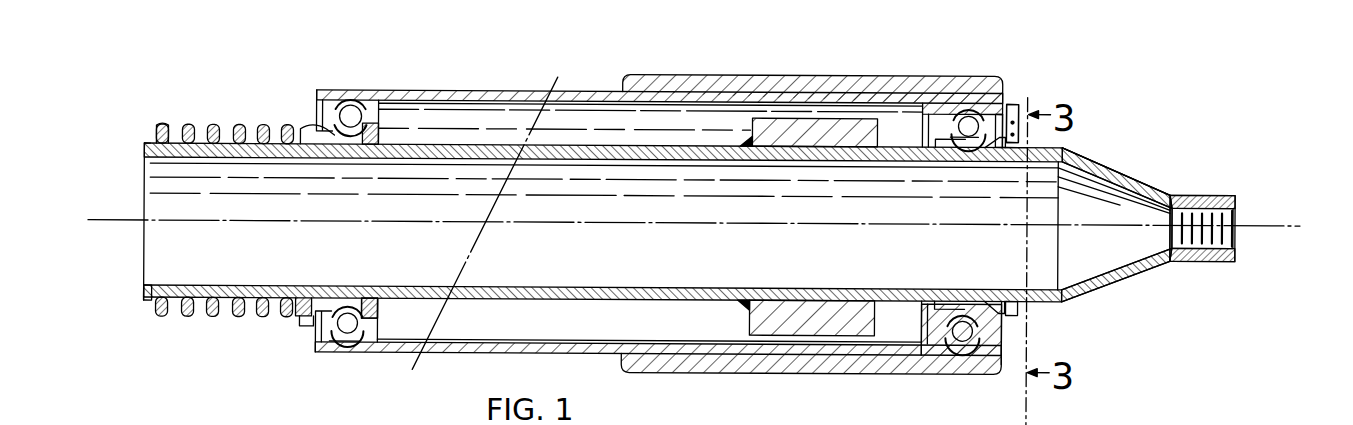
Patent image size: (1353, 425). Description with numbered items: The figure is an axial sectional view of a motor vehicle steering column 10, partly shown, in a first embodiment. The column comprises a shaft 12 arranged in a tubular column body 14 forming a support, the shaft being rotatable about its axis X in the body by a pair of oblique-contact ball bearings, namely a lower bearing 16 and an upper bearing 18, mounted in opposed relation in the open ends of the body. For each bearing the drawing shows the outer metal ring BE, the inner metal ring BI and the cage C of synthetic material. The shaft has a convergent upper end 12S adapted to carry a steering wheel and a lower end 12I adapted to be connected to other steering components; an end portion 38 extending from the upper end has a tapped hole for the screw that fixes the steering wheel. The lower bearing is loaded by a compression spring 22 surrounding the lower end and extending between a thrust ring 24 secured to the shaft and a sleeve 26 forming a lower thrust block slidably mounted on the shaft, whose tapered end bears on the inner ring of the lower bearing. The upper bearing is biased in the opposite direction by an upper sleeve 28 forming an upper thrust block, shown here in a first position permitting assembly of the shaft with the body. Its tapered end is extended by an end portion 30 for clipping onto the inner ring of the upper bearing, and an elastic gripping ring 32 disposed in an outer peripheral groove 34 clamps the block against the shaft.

The steering column 10 is at (528, 82).
The shaft 12 is at (585, 140).
The lower end 12I is at (144, 143).
The convergent upper end 12S is at (1118, 186).
The tubular column body 14 is at (447, 88).
The lower bearing 16 is at (352, 102).
The upper bearing 18 is at (945, 112).
The compression spring 22 is at (226, 124).
The thrust ring 24 is at (164, 126).
The sleeve 26 is at (301, 317).
The upper sleeve 28 is at (1022, 304).
The end portion 30 is at (931, 352).
The elastic gripping ring 32 is at (1026, 110).
The outer peripheral groove 34 is at (1030, 142).
The end portion 38 is at (1193, 194).
The outer metal ring BE is at (948, 110).
The inner metal ring BI is at (296, 352).
The cage C is at (1004, 108).
The axis X is at (1278, 235).